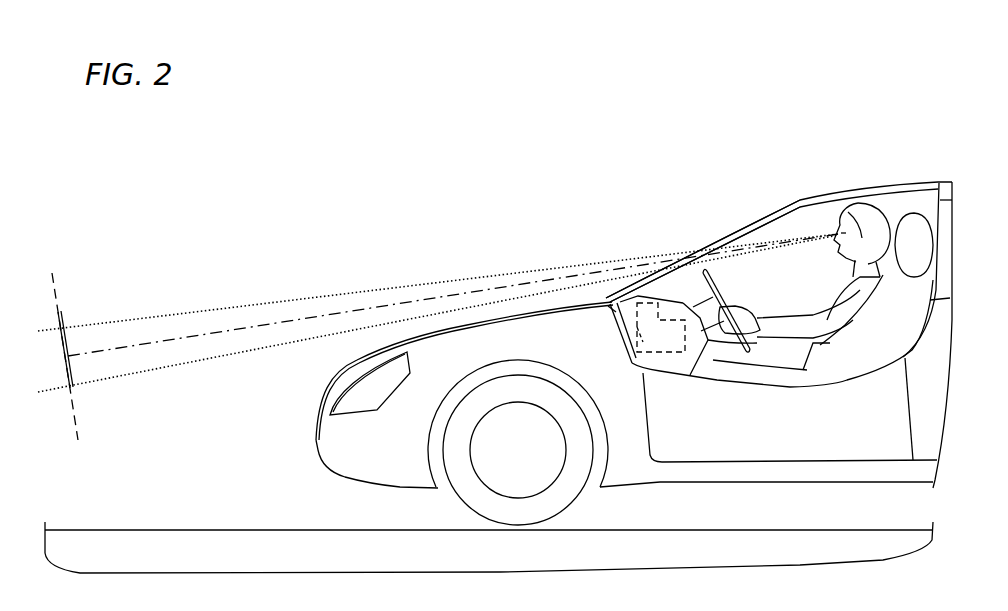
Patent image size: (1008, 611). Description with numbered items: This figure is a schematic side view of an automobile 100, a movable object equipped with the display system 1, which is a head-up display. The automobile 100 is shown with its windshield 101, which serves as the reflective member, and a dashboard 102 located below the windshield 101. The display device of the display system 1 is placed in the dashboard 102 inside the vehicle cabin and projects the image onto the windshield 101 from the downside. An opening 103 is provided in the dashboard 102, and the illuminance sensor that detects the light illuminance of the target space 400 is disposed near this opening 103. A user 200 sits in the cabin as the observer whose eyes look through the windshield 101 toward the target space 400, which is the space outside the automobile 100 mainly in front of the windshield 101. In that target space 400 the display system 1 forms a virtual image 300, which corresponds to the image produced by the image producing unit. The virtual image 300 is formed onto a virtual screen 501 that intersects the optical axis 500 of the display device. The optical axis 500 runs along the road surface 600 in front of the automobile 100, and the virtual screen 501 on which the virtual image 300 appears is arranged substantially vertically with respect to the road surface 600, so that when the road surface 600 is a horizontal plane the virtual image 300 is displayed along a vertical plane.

The display system 1 is at (618, 358).
The automobile 100 is at (948, 157).
The windshield 101 is at (728, 232).
The dashboard 102 is at (668, 363).
The opening 103 is at (612, 312).
The user 200 is at (857, 213).
The virtual image 300 is at (68, 368).
The target space 400 is at (250, 283).
The optical axis 500 is at (207, 337).
The virtual screen 501 is at (58, 300).
The road surface 600 is at (202, 530).